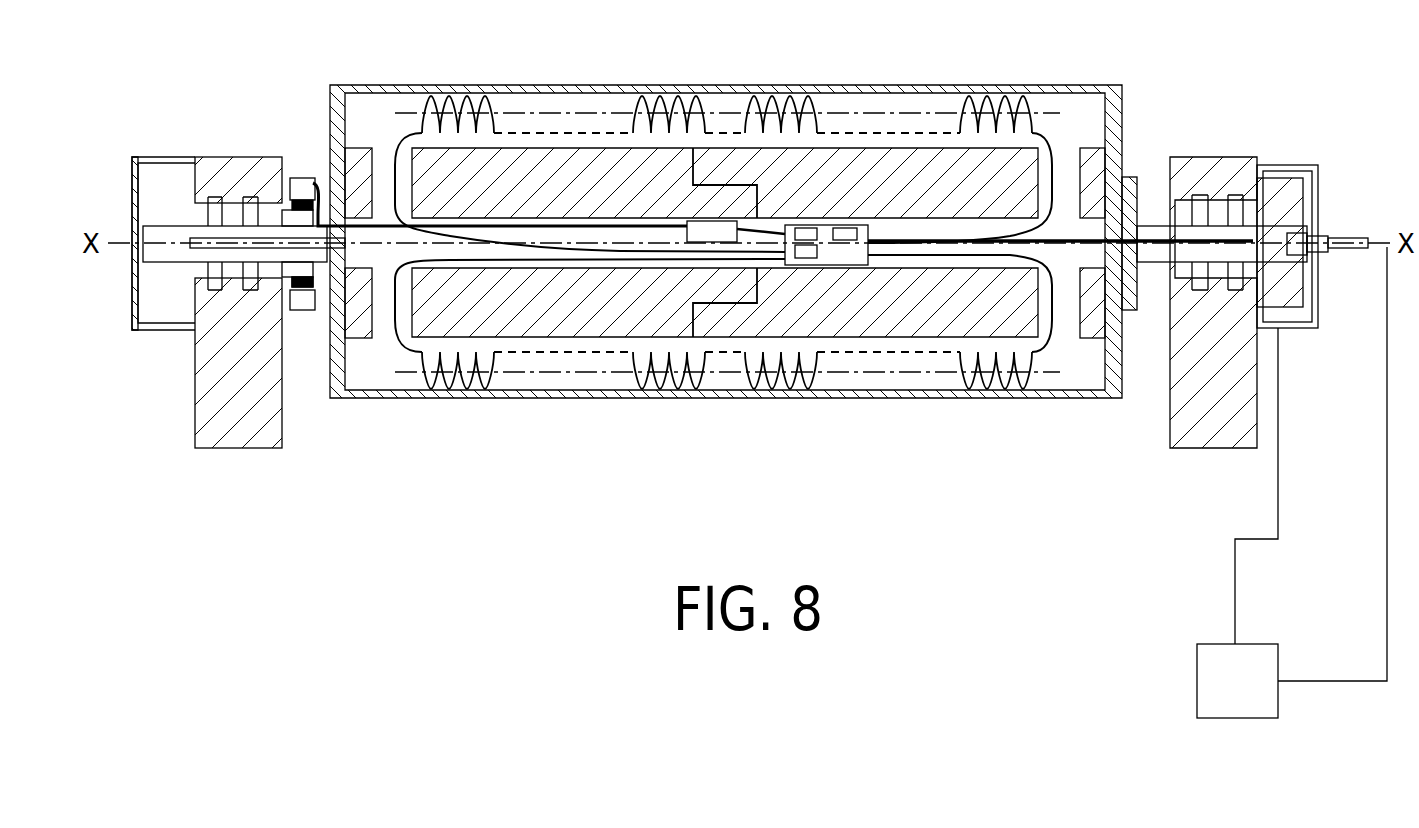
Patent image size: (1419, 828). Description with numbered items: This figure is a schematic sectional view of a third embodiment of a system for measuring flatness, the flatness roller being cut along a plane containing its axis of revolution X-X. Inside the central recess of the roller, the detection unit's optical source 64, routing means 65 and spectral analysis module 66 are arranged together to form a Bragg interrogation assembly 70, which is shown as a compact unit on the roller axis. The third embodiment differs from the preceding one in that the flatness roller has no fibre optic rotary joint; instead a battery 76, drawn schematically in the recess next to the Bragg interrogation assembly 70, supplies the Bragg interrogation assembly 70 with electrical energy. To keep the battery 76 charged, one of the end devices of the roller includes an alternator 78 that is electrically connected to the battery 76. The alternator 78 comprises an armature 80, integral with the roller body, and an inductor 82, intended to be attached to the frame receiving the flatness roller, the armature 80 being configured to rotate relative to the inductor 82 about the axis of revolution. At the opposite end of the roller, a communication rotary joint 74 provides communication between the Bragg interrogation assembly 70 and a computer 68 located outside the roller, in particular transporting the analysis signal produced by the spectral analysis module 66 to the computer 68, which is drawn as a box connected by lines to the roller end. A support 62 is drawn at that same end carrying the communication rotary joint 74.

The end bracket / support 62 is at (1276, 178).
The optical source 64 is at (806, 228).
The routing means 65 is at (845, 228).
The spectral analysis module 66 is at (808, 258).
The computer 68 is at (1237, 681).
The Bragg interrogation assembly 70 is at (856, 265).
The communication rotary joint 74 is at (1310, 242).
The battery 76 is at (715, 221).
The alternator 78 is at (307, 150).
The armature 80 is at (313, 318).
The inductor 82 is at (300, 311).